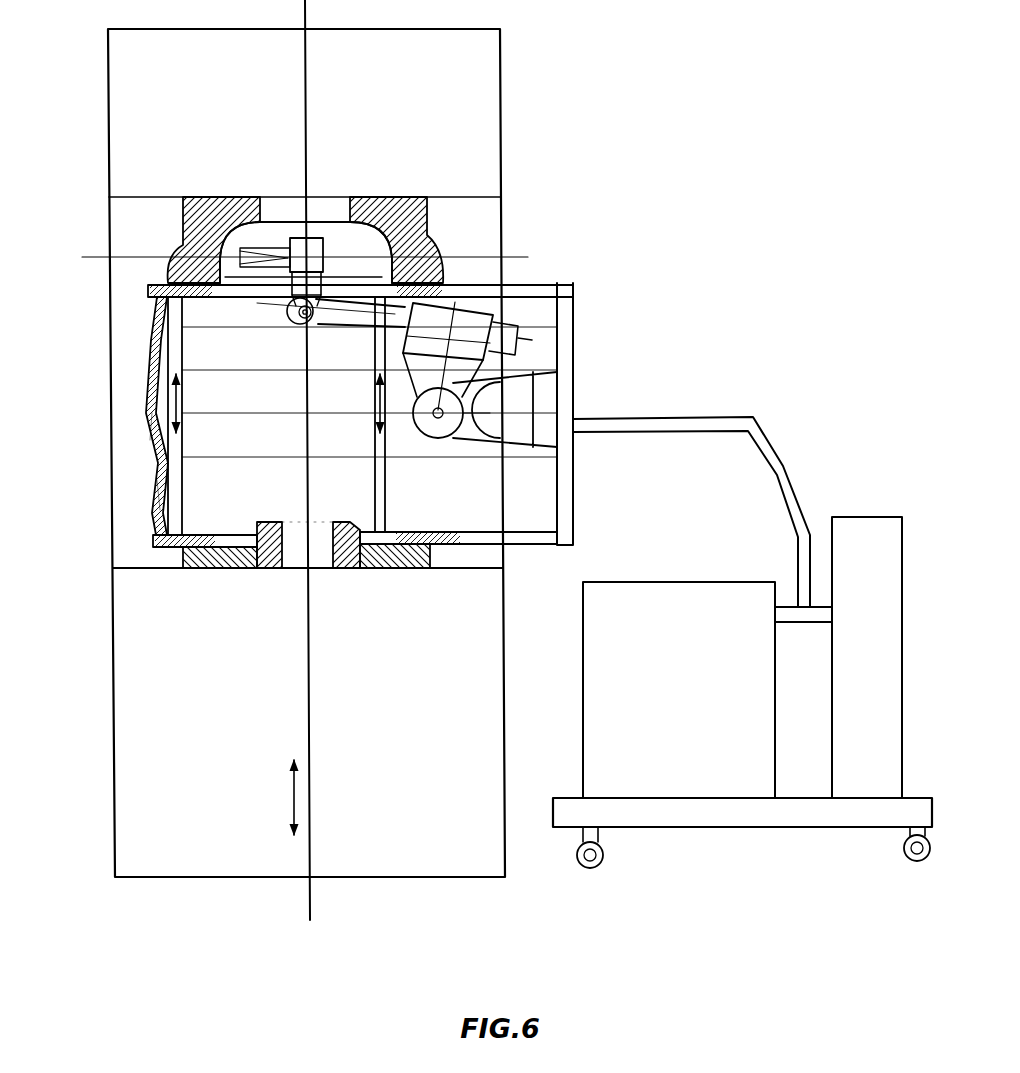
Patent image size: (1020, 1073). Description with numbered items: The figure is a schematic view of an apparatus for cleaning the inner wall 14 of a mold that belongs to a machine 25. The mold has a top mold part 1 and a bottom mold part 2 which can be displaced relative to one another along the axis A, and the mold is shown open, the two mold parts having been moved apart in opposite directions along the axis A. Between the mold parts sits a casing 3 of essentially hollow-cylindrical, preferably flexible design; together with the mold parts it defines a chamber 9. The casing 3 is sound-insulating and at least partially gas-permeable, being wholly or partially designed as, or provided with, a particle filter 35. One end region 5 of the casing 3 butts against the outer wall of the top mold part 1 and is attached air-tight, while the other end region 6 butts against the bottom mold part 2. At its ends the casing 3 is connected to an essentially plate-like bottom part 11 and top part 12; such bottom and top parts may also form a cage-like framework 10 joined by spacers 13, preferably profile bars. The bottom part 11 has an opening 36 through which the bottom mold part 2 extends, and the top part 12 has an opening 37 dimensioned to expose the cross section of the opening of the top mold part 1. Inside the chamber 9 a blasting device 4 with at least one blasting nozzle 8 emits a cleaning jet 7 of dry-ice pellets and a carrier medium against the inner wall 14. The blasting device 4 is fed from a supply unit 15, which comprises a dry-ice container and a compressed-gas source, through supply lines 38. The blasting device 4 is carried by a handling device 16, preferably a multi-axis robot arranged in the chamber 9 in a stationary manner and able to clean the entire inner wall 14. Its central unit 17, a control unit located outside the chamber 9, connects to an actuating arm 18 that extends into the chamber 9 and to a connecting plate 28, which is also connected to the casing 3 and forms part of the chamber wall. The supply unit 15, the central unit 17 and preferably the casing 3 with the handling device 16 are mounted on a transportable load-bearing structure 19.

The top mold part 1 is at (197, 197).
The bottom mold part 2 is at (322, 525).
The casing 3 is at (150, 512).
The blasting device 4 is at (314, 246).
The end region 5 is at (158, 278).
The end region 6 is at (162, 555).
The cleaning jet 7 is at (232, 237).
The blasting nozzle 8 is at (280, 240).
The chamber 9 is at (234, 401).
The cage-like framework 10 is at (420, 490).
The bottom part 11 is at (473, 545).
The top part 12 is at (200, 300).
The spacers 13 is at (170, 445).
The inner wall 14 is at (375, 238).
The supply unit 15 is at (630, 575).
The handling device 16 is at (420, 441).
The central unit 17 is at (873, 512).
The actuating arm 18 is at (518, 323).
The transportable load-bearing structure 19 is at (667, 833).
The machine 25 is at (500, 170).
The connecting plate 28 is at (582, 368).
The particle filter 35 is at (150, 485).
The opening 36 is at (233, 548).
The opening 37 is at (400, 240).
The supply lines 38 is at (770, 417).
The axis A is at (305, 732).